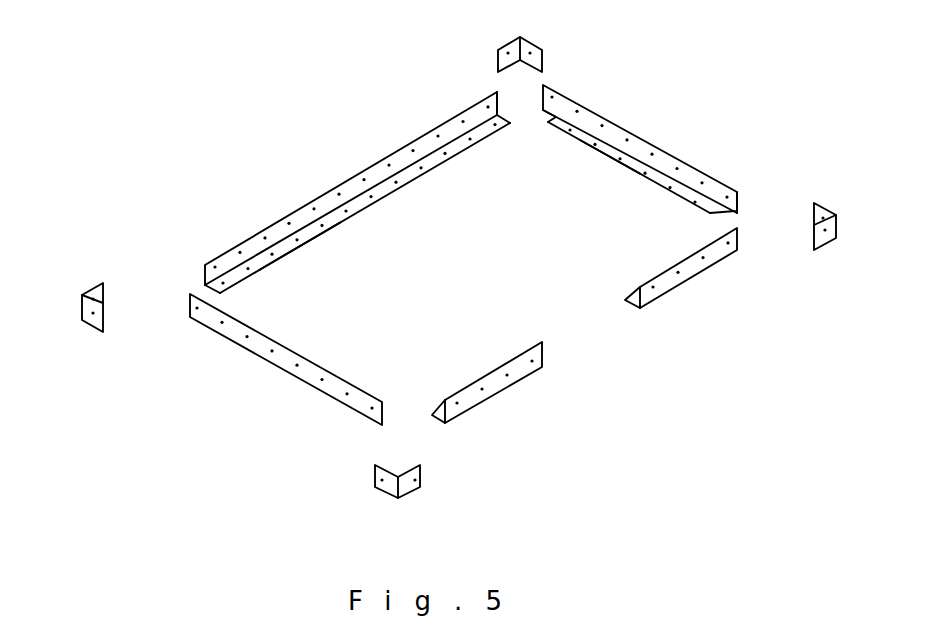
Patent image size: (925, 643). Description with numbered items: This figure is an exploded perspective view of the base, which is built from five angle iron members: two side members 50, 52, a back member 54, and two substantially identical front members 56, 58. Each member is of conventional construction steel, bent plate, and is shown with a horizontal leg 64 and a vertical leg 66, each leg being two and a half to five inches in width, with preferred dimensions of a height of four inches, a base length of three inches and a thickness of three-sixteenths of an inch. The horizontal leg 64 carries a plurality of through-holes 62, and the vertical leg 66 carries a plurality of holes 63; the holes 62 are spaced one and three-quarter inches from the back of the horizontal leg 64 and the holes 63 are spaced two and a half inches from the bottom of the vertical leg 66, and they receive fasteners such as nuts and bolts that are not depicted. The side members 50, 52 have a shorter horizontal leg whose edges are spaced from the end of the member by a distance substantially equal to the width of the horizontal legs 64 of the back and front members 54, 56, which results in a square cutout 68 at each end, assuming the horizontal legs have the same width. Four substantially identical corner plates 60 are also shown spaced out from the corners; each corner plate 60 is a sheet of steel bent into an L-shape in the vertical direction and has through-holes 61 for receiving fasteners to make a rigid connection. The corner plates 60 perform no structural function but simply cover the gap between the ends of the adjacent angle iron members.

The side member 50 is at (188, 300).
The side member 52 is at (614, 121).
The back member 54 is at (326, 185).
The front member 56 is at (472, 415).
The front member 58 is at (663, 298).
The corner plate 60 is at (526, 42).
The through-hole 61 is at (530, 55).
The through-hole 62 is at (422, 169).
The hole 63 is at (389, 167).
The horizontal leg 64 is at (337, 229).
The vertical leg 66 is at (499, 92).
The square cutout 68 is at (556, 118).